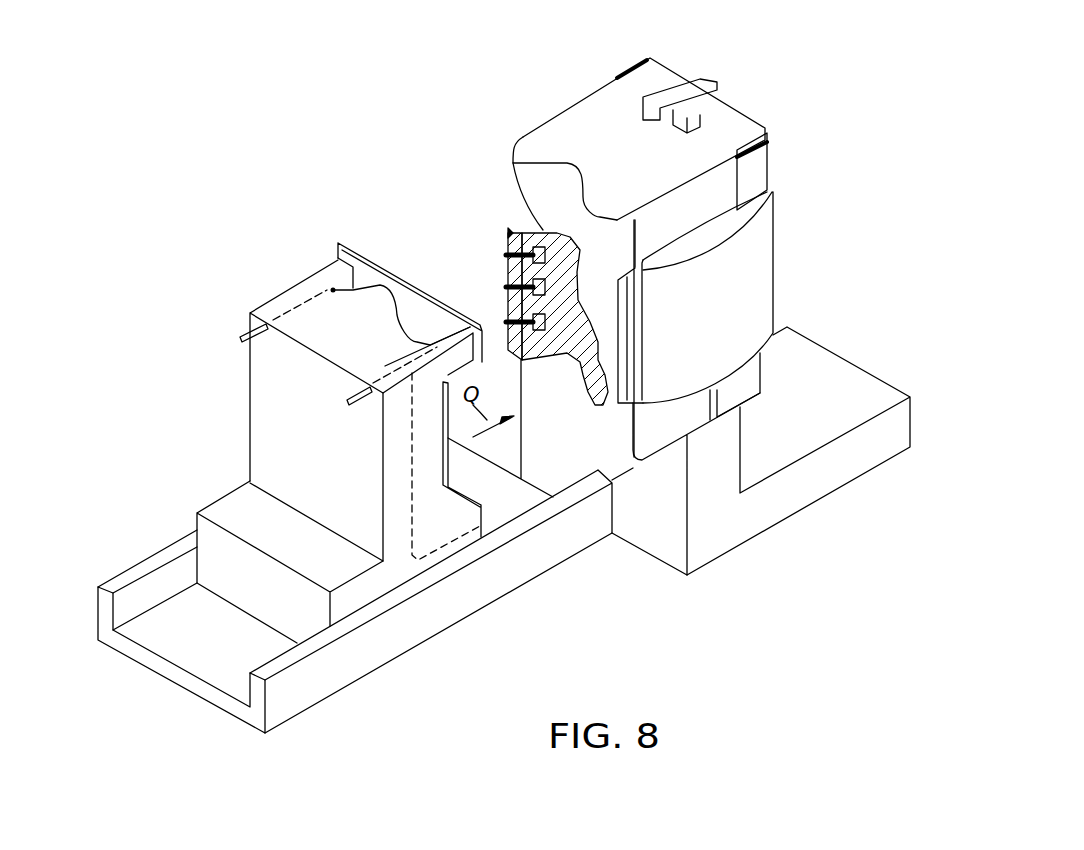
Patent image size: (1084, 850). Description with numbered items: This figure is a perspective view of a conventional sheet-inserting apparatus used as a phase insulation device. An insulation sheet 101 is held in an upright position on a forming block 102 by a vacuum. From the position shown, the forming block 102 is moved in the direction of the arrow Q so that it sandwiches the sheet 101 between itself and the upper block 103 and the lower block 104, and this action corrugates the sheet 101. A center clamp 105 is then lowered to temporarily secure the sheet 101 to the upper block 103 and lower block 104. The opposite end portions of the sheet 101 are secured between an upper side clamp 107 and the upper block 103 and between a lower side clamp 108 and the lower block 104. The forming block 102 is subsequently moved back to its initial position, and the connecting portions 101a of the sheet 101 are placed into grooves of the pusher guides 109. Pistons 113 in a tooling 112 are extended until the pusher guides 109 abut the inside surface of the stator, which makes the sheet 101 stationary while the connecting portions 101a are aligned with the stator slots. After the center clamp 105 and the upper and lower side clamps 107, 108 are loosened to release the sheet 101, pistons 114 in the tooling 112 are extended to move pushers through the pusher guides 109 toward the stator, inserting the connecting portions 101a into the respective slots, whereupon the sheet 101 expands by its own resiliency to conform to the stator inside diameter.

The insulation sheet 101 is at (368, 270).
The connecting portions 101a is at (455, 477).
The forming block 102 is at (288, 298).
The upper block 103 is at (724, 127).
The lower block 104 is at (652, 440).
The center clamp 105 is at (705, 80).
The upper side clamp 107 is at (625, 76).
The lower side clamp 108 is at (730, 405).
The pusher guides 109 is at (510, 230).
The tooling 112 is at (760, 252).
The pistons 113 is at (508, 288).
The pistons 114 is at (508, 232).